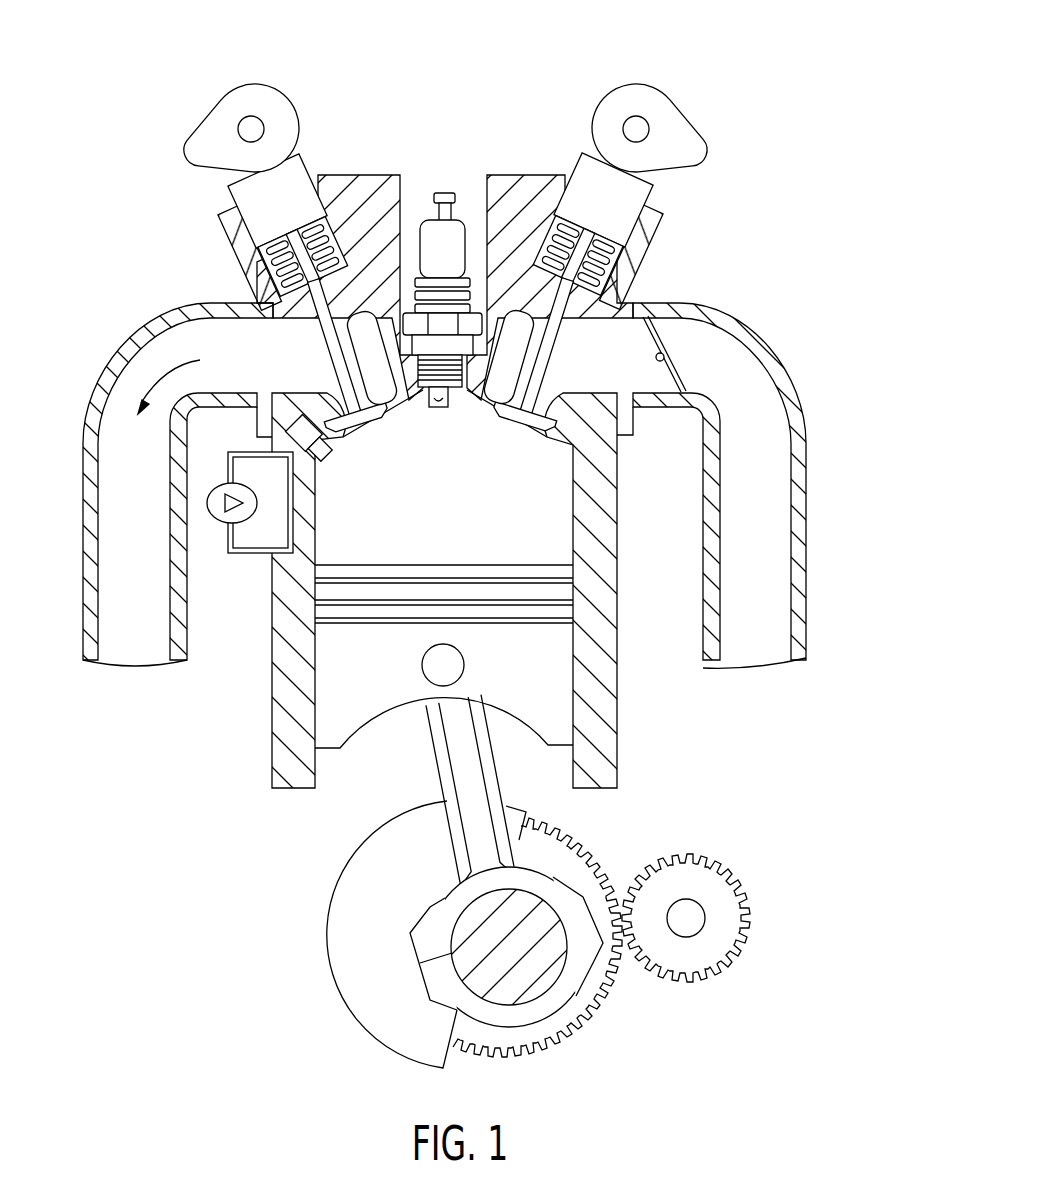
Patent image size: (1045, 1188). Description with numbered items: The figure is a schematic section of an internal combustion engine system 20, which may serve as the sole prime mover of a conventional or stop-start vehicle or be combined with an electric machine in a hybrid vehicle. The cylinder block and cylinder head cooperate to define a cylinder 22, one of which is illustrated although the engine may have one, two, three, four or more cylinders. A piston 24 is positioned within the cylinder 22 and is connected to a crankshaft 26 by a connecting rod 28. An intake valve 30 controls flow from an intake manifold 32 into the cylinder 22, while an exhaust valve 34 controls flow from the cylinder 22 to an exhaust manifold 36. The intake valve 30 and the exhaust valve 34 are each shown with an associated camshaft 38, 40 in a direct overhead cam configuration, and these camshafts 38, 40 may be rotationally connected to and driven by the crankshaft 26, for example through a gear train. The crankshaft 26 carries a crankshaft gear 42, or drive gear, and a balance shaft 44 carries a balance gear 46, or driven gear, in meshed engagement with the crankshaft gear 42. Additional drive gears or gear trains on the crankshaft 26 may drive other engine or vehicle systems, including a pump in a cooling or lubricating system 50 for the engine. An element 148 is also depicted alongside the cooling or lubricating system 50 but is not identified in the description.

The internal combustion engine system 20 is at (776, 75).
The cylinder 22 is at (540, 525).
The piston 24 is at (502, 675).
The crankshaft 26 is at (452, 927).
The connecting rod 28 is at (450, 758).
The intake valve 30 is at (676, 239).
The intake manifold 32 is at (797, 312).
The exhaust valve 34 is at (213, 233).
The exhaust manifold 36 is at (137, 303).
The camshaft 38 is at (638, 123).
The camshaft 40 is at (261, 129).
The crankshaft gear 42 is at (586, 853).
The balance shaft 44 is at (694, 917).
The balance gear 46 is at (727, 938).
The cooling or lubricating system 50 is at (257, 553).
The sensor 148 is at (222, 524).